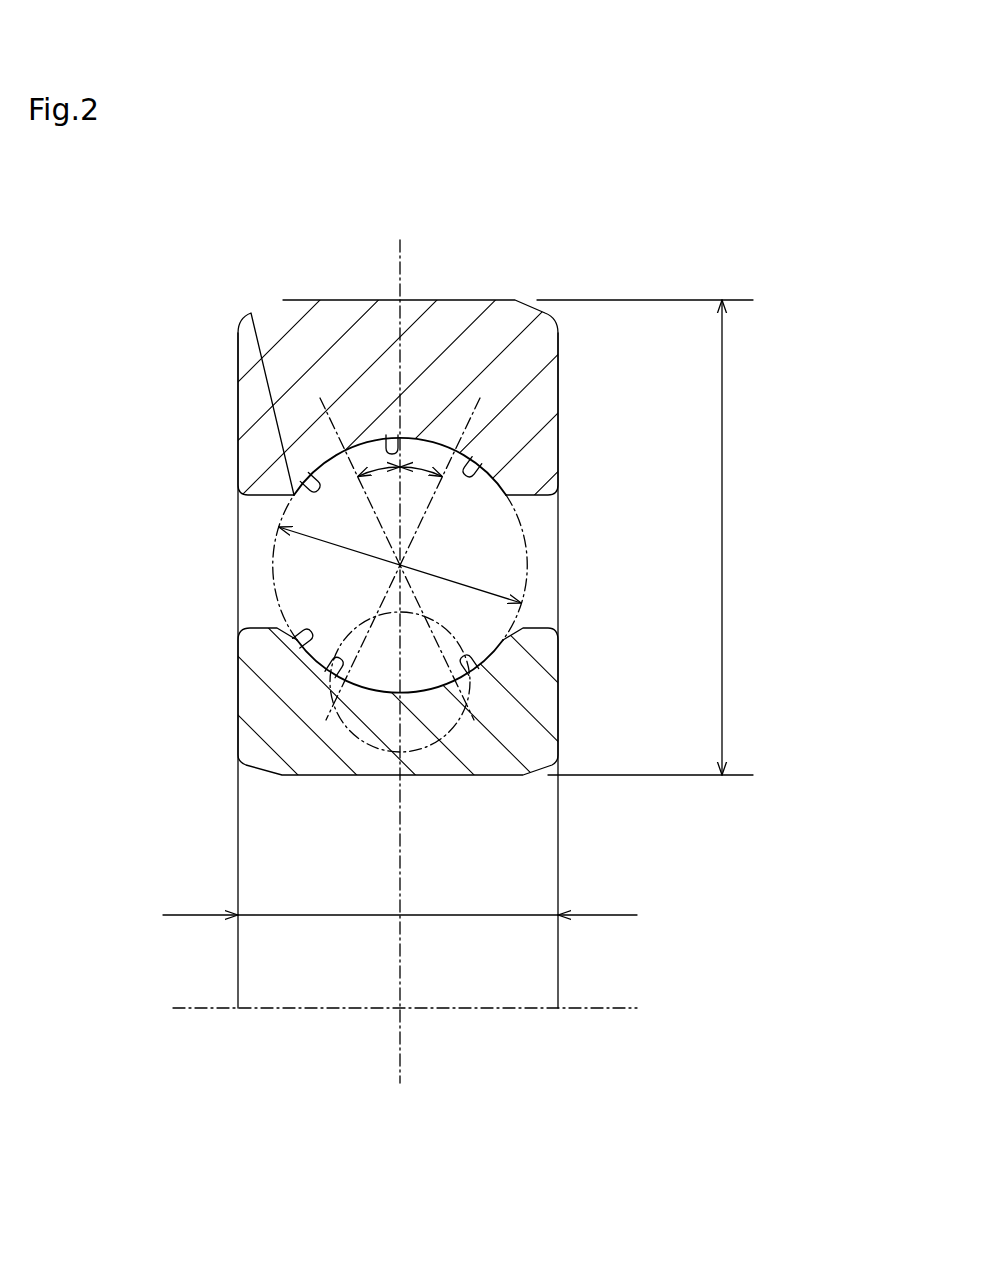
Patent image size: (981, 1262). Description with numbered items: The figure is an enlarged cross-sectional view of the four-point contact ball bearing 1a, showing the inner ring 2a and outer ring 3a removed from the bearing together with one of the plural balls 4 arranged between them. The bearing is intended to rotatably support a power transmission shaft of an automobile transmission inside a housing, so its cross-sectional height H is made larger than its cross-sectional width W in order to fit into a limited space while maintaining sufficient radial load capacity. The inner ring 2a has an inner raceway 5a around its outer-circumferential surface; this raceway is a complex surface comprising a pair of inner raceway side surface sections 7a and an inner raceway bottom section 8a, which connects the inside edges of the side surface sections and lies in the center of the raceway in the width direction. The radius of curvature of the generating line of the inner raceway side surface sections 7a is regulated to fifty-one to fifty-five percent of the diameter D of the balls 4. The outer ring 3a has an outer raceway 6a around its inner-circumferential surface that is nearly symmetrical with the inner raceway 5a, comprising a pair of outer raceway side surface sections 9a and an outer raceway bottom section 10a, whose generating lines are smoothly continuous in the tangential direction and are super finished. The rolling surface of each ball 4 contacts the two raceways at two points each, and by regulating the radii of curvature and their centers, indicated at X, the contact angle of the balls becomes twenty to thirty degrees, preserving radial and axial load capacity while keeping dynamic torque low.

The four-point contact ball bearing 1a is at (517, 297).
The inner ring 2a is at (535, 774).
The outer ring 3a is at (560, 332).
The ball 4 is at (502, 584).
The inner raceway 5a is at (262, 632).
The outer raceway 6a is at (308, 490).
The inner raceway side surface section 7a is at (330, 653).
The inner raceway bottom section 8a is at (378, 690).
The outer raceway side surface section 9a is at (311, 483).
The outer raceway bottom section 10a is at (388, 447).
The diameter of the balls D is at (438, 577).
The cross-sectional height H is at (722, 538).
The cross-sectional width W is at (492, 916).
The center of curvature X is at (445, 748).